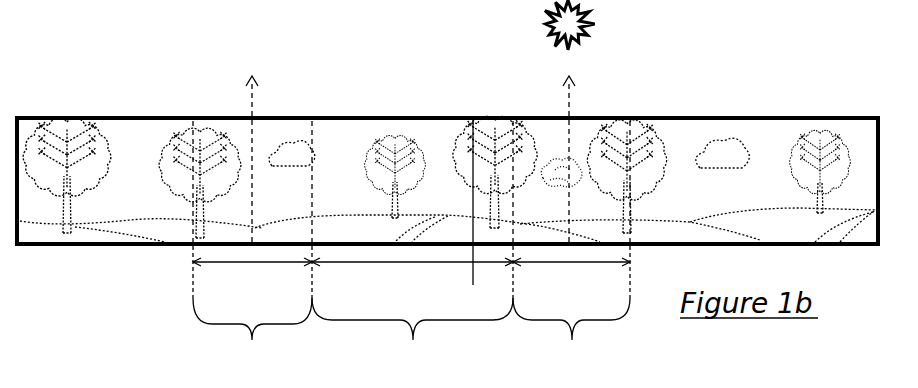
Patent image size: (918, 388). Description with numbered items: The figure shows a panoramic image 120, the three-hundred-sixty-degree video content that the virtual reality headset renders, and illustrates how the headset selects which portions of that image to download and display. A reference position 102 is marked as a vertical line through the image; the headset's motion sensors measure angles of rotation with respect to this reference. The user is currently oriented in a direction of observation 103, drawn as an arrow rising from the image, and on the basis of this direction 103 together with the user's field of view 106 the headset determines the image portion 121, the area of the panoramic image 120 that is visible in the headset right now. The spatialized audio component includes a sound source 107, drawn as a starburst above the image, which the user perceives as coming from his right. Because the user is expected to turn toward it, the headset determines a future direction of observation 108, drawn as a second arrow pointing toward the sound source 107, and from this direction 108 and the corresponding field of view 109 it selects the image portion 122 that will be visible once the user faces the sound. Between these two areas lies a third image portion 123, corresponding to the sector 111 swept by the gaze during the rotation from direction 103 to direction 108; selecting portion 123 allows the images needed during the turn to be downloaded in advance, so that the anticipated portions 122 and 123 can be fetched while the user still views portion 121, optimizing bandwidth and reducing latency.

The panoramic image 120 is at (33, 117).
The direction of observation 103 is at (253, 107).
The future direction of observation 108 is at (571, 108).
The sound source 107 is at (550, 42).
The reference position 102 is at (473, 265).
The field of view 106 is at (290, 262).
The sector 111 is at (410, 262).
The field of view 109 is at (603, 262).
The image portion 121 is at (252, 332).
The third image portion 123 is at (412, 332).
The image portion 122 is at (571, 329).